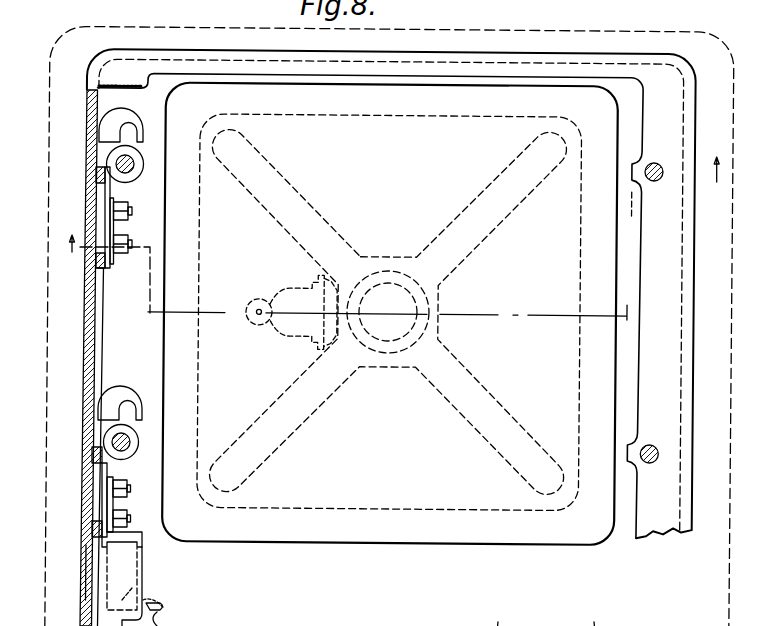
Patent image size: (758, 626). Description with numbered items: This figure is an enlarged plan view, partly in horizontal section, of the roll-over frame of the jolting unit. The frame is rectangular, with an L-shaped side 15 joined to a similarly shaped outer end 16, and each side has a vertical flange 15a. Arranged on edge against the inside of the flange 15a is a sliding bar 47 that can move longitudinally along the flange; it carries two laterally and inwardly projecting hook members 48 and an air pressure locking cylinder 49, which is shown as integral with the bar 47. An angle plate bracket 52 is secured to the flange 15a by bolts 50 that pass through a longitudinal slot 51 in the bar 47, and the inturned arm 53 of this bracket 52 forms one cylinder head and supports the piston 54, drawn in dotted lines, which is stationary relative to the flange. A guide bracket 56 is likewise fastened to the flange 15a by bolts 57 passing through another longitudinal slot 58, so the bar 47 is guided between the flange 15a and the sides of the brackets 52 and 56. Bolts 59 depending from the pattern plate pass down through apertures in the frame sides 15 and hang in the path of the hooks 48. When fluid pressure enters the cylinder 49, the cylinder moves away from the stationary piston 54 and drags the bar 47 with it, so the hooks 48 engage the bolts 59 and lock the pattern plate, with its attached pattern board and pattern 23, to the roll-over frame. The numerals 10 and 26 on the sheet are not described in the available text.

The direction arrow 10 is at (395, 215).
The L-shaped side 15 is at (88, 357).
The vertical flange 15a is at (86, 550).
The outer end 16 is at (195, 53).
The pattern board and pattern 23 is at (495, 613).
The lower support 26 is at (587, 613).
The sliding bar 47 is at (101, 338).
The hook member 48 is at (131, 118).
The air pressure locking cylinder 49 is at (143, 586).
The bolt 50 is at (131, 488).
The longitudinal slot 51 is at (104, 473).
The angle plate bracket 52 is at (93, 462).
The inturned arm 53 is at (143, 540).
The piston 54 is at (164, 604).
The guide bracket 56 is at (112, 258).
The bolt 57 is at (113, 212).
The longitudinal slot 58 is at (110, 189).
The bolt 59 is at (70, 165).